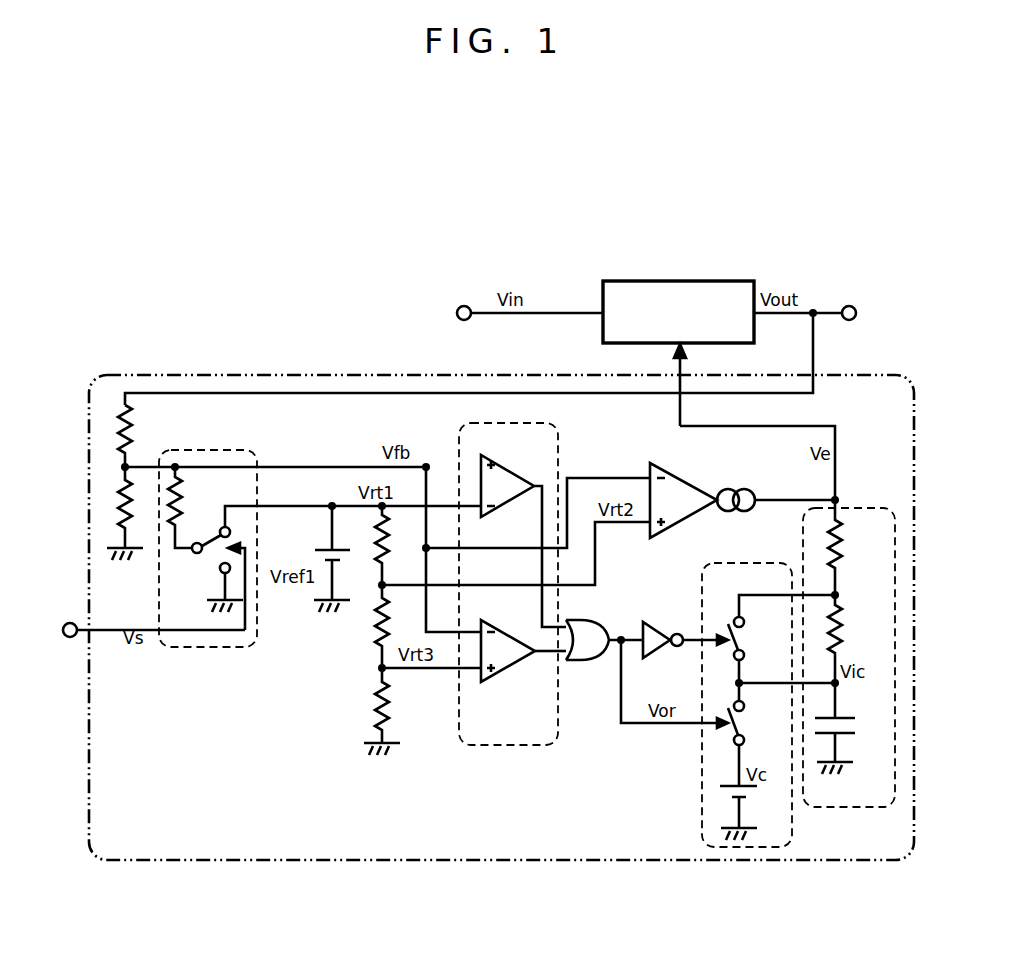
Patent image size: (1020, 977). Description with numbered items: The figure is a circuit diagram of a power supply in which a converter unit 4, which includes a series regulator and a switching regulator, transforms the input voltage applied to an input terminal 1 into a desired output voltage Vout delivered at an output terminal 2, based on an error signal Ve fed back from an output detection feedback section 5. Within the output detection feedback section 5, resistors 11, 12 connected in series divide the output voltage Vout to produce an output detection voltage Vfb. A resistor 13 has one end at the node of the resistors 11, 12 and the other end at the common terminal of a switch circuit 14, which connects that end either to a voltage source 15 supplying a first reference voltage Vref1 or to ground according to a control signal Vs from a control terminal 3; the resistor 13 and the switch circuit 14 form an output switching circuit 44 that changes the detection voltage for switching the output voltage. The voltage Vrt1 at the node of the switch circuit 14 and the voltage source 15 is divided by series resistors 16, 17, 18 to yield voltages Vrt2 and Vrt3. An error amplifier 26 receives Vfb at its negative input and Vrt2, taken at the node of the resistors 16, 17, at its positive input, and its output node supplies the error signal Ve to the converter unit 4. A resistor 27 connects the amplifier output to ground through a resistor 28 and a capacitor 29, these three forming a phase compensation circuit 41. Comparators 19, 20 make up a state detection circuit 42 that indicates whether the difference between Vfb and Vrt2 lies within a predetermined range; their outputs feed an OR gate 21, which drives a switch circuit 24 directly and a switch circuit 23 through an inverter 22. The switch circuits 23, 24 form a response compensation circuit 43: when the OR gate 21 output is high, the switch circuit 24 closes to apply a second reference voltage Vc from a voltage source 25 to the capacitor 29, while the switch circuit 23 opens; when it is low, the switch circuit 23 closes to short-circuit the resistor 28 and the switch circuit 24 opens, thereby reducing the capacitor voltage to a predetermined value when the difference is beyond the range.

The input terminal 1 is at (457, 313).
The output terminal 2 is at (848, 305).
The control terminal 3 is at (69, 637).
The converter unit 4 is at (656, 281).
The output detection feedback section 5 is at (280, 862).
The resistor 11 is at (137, 419).
The resistor 12 is at (135, 505).
The resistor 13 is at (183, 488).
The switch circuit 14 is at (210, 562).
The voltage source 15 is at (314, 553).
The resistor 16 is at (375, 545).
The resistor 17 is at (370, 626).
The resistor 18 is at (370, 712).
The comparator 19 is at (497, 470).
The comparator 20 is at (505, 680).
The OR gate 21 is at (595, 661).
The inverter 22 is at (656, 622).
The switch circuit 23 is at (745, 648).
The switch circuit 24 is at (745, 733).
The voltage source 25 is at (749, 803).
The error amplifier 26 is at (650, 465).
The resistor 27 is at (845, 544).
The resistor 28 is at (843, 646).
The capacitor 29 is at (848, 731).
The phase compensation circuit 41 is at (856, 502).
The state detection circuit 42 is at (543, 748).
The response compensation circuit 43 is at (700, 773).
The output switching circuit 44 is at (185, 648).